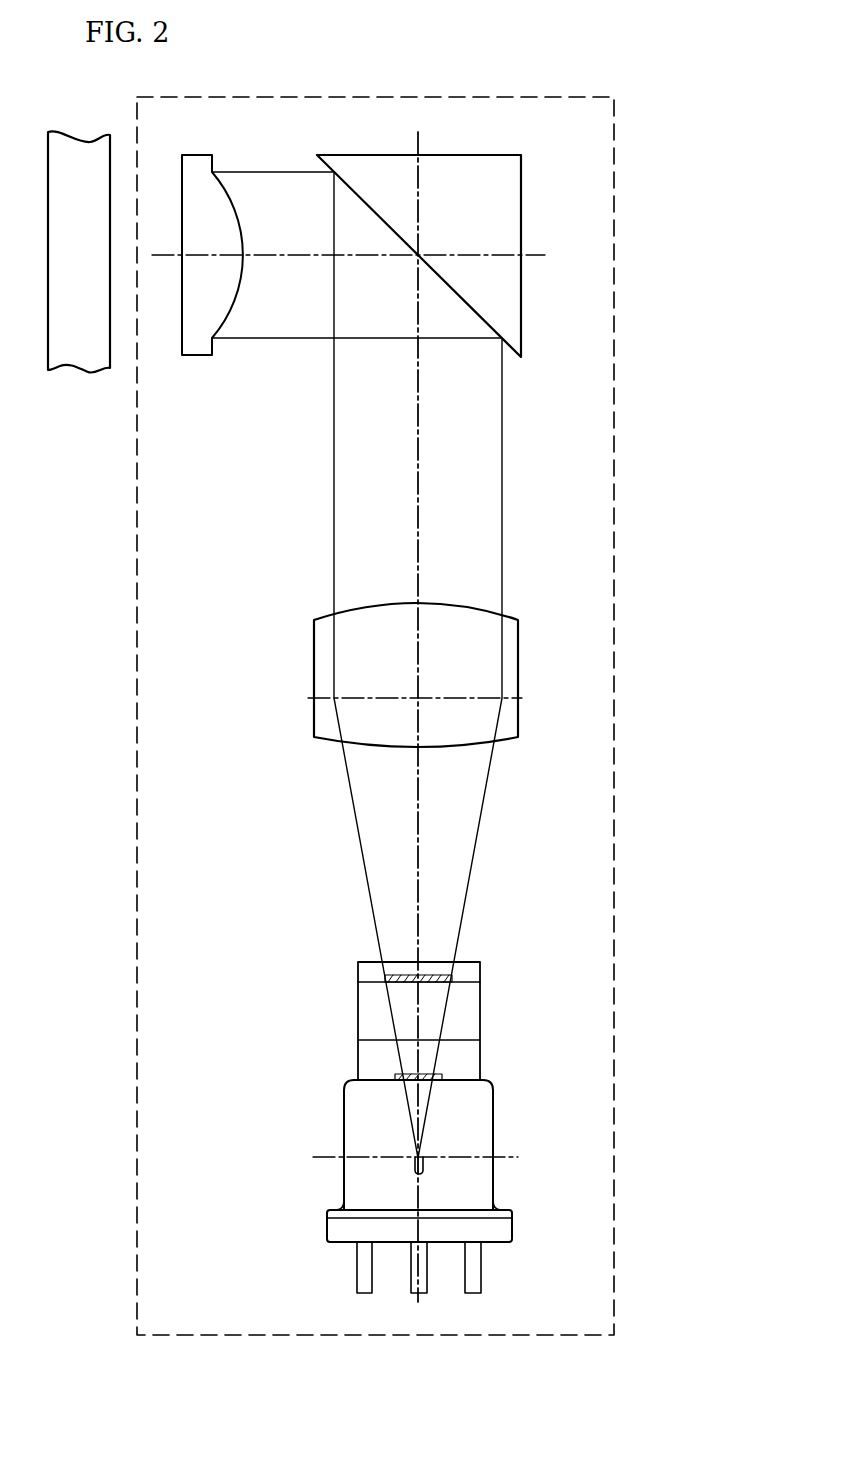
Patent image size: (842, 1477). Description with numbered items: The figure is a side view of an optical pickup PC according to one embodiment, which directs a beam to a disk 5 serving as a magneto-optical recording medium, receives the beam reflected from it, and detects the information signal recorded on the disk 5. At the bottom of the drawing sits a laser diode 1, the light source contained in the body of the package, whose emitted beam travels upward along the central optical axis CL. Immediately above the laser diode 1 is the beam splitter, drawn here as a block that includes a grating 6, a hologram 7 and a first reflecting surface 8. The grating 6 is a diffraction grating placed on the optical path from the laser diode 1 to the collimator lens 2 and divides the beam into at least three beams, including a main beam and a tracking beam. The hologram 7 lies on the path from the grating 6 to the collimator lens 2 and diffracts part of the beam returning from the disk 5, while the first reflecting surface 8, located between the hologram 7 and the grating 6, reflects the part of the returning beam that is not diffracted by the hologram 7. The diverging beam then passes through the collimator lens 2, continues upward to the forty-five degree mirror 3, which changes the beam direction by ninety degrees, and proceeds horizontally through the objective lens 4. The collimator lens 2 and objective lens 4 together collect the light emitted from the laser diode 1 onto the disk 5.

The laser diode 1 is at (423, 1162).
The collimator lens 2 is at (518, 673).
The 45° mirror 3 is at (521, 293).
The objective lens 4 is at (195, 355).
The disk 5 is at (70, 372).
The grating 6 is at (443, 1077).
The hologram 7 is at (455, 975).
The first reflecting surface 8 is at (467, 1013).
The center line (optical axis) CL is at (418, 467).
The optical pickup PC is at (624, 88).